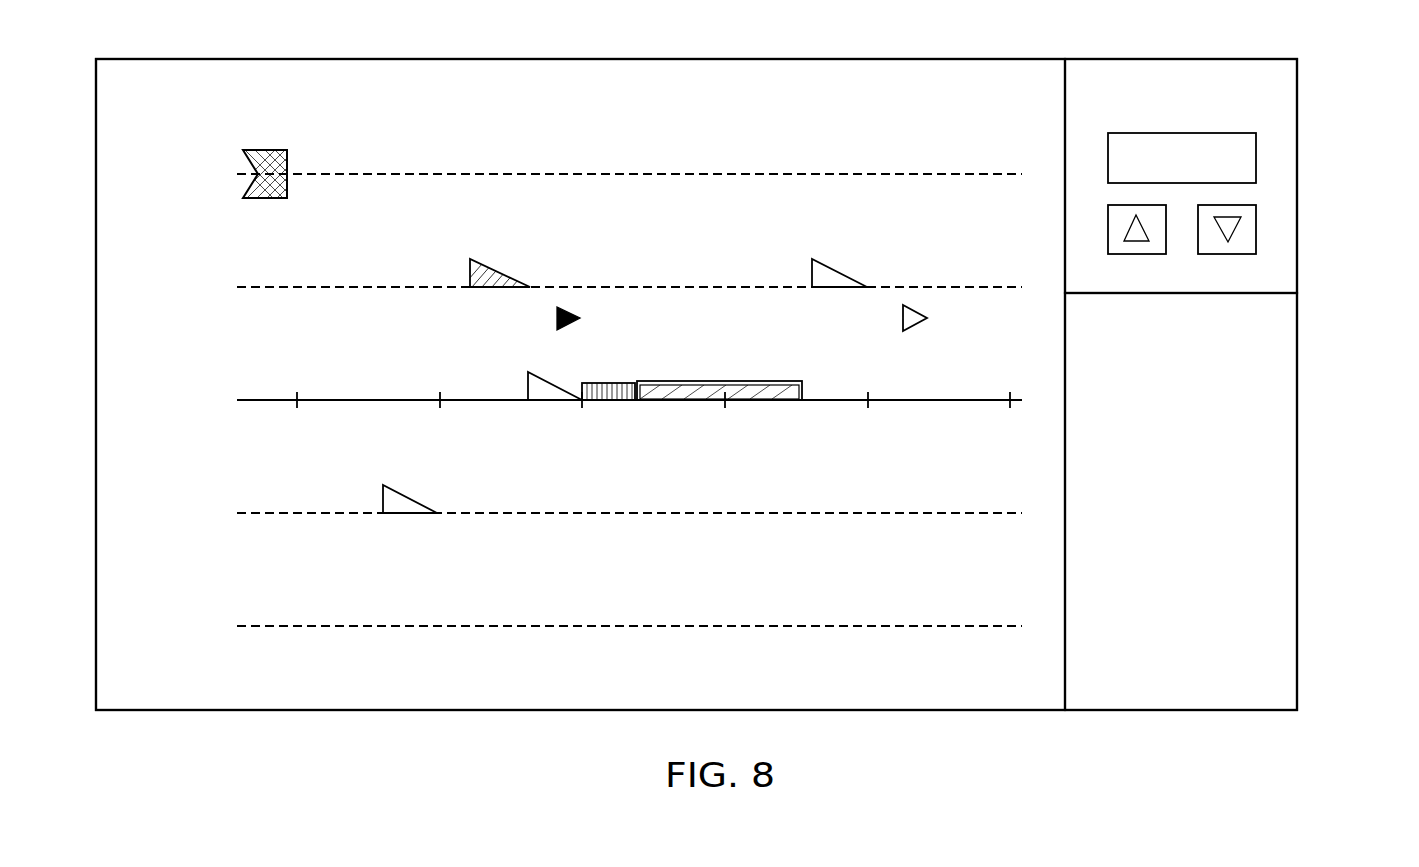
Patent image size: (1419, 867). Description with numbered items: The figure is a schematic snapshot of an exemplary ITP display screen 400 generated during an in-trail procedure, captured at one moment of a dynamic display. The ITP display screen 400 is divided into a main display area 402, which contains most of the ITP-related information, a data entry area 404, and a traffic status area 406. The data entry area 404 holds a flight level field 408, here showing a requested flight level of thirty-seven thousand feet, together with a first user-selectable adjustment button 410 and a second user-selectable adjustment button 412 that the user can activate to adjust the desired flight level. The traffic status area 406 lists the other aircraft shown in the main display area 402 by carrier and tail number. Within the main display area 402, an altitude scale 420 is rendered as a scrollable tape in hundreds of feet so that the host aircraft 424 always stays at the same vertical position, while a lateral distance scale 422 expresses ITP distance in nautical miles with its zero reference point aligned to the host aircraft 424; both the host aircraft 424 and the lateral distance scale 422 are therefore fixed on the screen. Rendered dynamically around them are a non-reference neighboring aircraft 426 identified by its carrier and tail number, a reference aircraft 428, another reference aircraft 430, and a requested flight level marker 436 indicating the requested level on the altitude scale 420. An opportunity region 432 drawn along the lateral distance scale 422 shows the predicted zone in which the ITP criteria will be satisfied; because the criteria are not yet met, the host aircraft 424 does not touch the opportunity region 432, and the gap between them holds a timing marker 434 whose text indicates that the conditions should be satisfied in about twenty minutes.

The ITP display screen 400 is at (347, 58).
The main display area 402 is at (636, 90).
The data entry area 404 is at (1285, 133).
The traffic status area 406 is at (1283, 548).
The flight level field 408 is at (1252, 167).
The first user-selectable adjustment button 410 is at (1121, 254).
The second user-selectable adjustment button 412 is at (1216, 254).
The altitude scale 420 is at (198, 148).
The lateral distance scale 422 is at (932, 402).
The host aircraft 424 is at (546, 393).
The non-reference neighboring aircraft 426 is at (412, 502).
The reference aircraft 428 is at (494, 276).
The reference aircraft 430 is at (837, 276).
The opportunity region 432 is at (707, 385).
The timing marker 434 is at (617, 402).
The requested flight level marker 436 is at (264, 150).